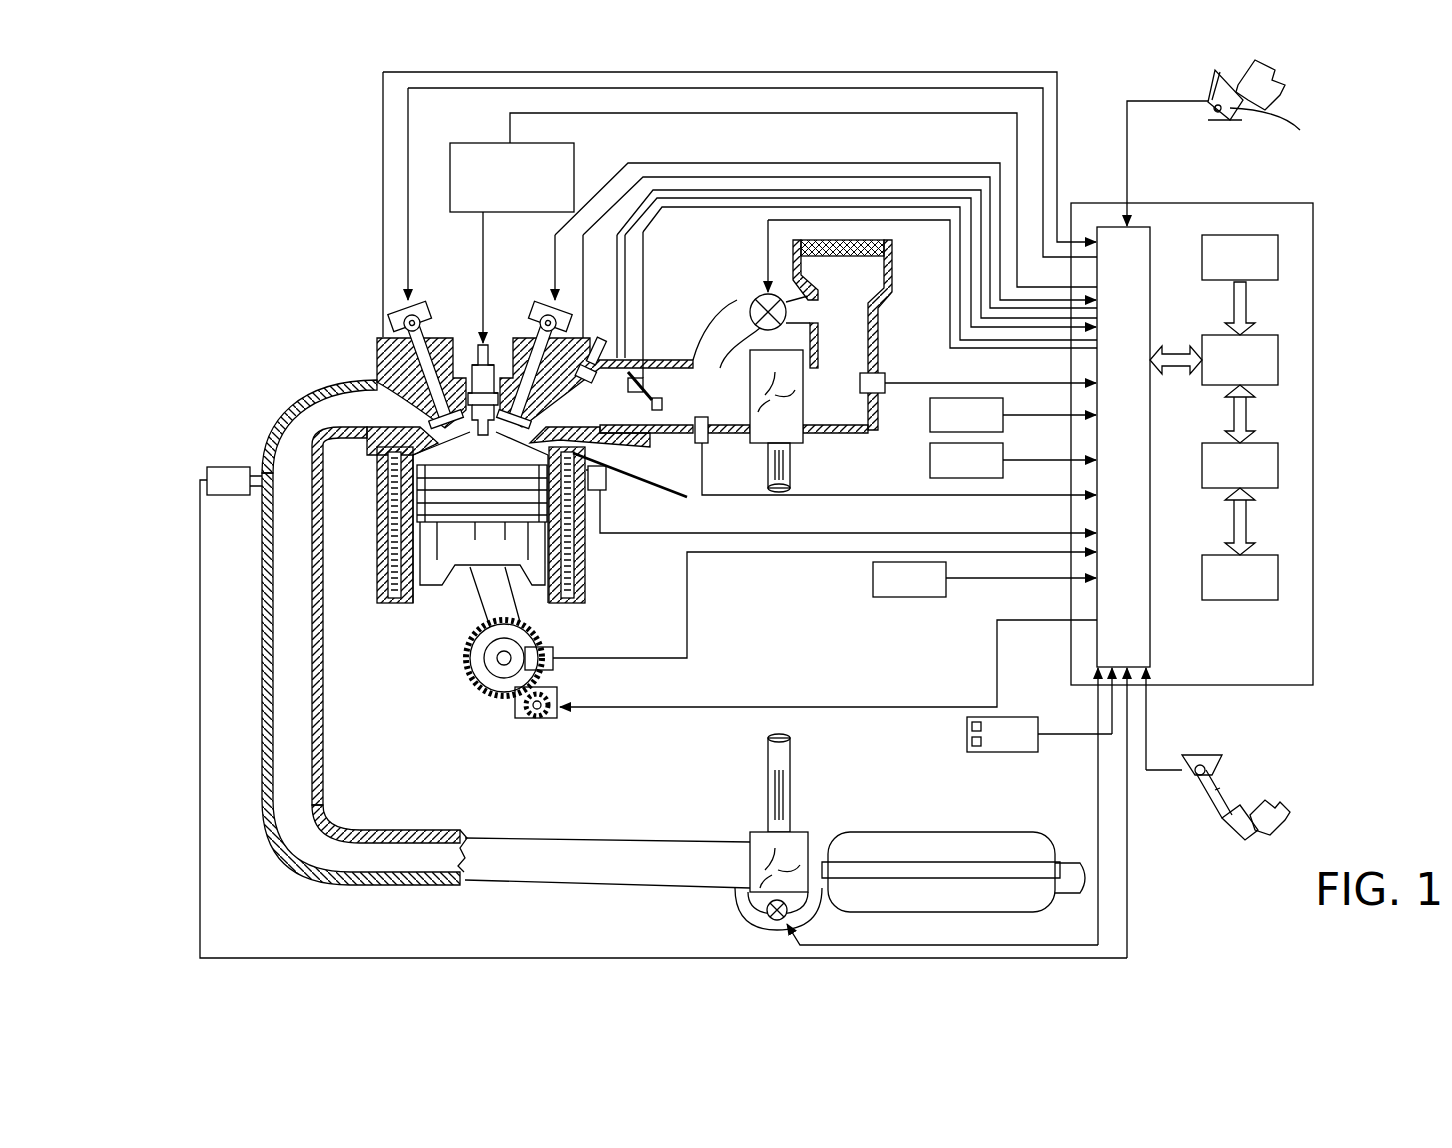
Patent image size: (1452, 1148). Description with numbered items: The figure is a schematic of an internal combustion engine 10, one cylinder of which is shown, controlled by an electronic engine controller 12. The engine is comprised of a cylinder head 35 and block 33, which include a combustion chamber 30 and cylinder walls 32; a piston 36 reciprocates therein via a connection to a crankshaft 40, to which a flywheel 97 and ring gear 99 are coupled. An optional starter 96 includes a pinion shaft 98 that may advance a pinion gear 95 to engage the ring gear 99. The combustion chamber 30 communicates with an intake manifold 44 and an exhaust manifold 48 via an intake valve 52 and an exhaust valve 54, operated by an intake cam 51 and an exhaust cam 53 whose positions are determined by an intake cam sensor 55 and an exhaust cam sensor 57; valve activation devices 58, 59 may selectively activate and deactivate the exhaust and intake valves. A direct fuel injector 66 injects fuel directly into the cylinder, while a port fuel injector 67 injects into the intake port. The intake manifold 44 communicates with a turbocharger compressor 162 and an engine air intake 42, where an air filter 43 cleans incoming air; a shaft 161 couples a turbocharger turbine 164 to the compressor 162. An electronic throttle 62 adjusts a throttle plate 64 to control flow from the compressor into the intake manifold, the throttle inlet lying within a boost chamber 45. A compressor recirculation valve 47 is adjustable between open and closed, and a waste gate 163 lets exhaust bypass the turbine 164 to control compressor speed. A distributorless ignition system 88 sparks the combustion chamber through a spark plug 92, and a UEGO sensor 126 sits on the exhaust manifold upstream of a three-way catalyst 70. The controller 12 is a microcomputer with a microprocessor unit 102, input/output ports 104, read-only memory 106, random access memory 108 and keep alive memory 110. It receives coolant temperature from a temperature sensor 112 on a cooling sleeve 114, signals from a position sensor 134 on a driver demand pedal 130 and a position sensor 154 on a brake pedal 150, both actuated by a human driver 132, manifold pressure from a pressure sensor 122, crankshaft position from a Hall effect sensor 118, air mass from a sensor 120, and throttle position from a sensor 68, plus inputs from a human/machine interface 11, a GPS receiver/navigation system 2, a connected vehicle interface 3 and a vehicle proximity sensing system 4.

The internal combustion engine 10 is at (306, 290).
The electronic engine controller 12 is at (1313, 203).
The GPS receiver/navigation system 2 is at (966, 415).
The connected vehicle interface 3 is at (966, 460).
The vehicle proximity sensing system 4 is at (1002, 734).
The human/machine interface 11 is at (909, 579).
The combustion chamber 30 is at (398, 540).
The cylinder walls 32 is at (420, 590).
The block 33 is at (372, 490).
The cylinder head 35 is at (370, 334).
The piston 36 is at (462, 552).
The crankshaft 40 is at (485, 680).
The engine air intake 42 is at (710, 258).
The air filter 43 is at (860, 256).
The intake manifold 44 is at (602, 401).
The boost chamber 45 is at (734, 411).
The compressor recirculation valve 47 is at (758, 298).
The exhaust manifold 48 is at (364, 632).
The intake cam 51 is at (535, 300).
The intake valve 52 is at (525, 400).
The exhaust cam 53 is at (418, 308).
The exhaust valve 54 is at (370, 388).
The intake cam sensor 55 is at (568, 325).
The exhaust cam sensor 57 is at (396, 330).
The valve activation device 58 is at (422, 322).
The valve activation device 59 is at (540, 325).
The electronic throttle 62 is at (650, 396).
The throttle plate 64 is at (662, 405).
The direct fuel injector 66 is at (602, 473).
The port fuel injector 67 is at (594, 352).
The throttle position sensor 68 is at (640, 378).
The three-way catalyst 70 is at (880, 832).
The distributorless ignition system 88 is at (574, 155).
The spark plug 92 is at (492, 340).
The pinion gear 95 is at (540, 717).
The starter 96 is at (550, 718).
The flywheel 97 is at (478, 668).
The pinion shaft 98 is at (528, 710).
The ring gear 99 is at (505, 700).
The microprocessor unit 102 is at (1278, 362).
The input/output ports 104 is at (1150, 245).
The read-only memory 106 is at (1278, 258).
The random access memory 108 is at (1278, 468).
The keep alive memory 110 is at (1278, 578).
The temperature sensor 112 is at (575, 556).
The cooling sleeve 114 is at (595, 585).
The Hall effect sensor 118 is at (552, 648).
The air mass sensor 120 is at (878, 373).
The pressure sensor 122 is at (695, 440).
The UEGO sensor 126 is at (207, 470).
The driver demand pedal 130 is at (1205, 90).
The human driver 132 is at (1275, 72).
The position sensor 134 is at (1305, 125).
The brake pedal 150 is at (1222, 818).
The position sensor 154 is at (1192, 765).
The shaft 161 is at (768, 470).
The turbocharger compressor 162 is at (790, 425).
The waste gate 163 is at (768, 925).
The turbocharger turbine 164 is at (755, 832).